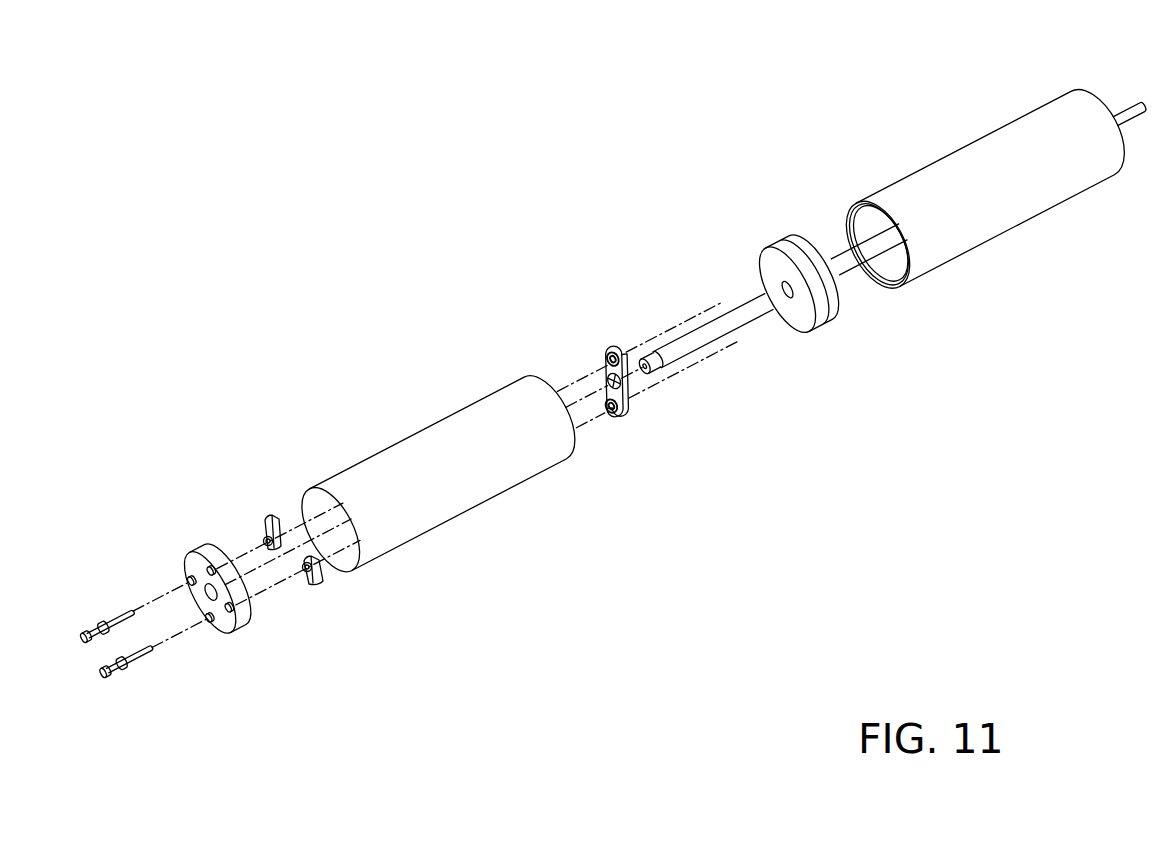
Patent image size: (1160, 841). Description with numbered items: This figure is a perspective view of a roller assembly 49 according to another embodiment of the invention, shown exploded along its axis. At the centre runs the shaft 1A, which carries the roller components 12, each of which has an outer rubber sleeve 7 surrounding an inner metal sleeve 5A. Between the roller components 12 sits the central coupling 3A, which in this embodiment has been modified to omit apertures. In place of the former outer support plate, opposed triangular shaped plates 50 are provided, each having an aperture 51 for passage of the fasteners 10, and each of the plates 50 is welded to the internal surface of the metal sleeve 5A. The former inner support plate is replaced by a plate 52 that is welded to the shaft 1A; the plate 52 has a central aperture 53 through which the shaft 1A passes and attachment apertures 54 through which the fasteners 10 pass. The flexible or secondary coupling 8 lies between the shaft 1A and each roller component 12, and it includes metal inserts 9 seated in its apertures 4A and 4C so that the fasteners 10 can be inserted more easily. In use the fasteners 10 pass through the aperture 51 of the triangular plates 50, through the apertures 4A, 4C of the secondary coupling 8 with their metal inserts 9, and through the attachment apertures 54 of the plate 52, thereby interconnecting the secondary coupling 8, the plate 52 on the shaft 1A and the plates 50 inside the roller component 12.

The roller assembly 49 is at (443, 234).
The roller component 12 is at (721, 301).
The outer rubber sleeve 7 is at (488, 493).
The shaft 1A is at (748, 310).
The central coupling 3A is at (795, 328).
The metal sleeve 5A is at (878, 288).
The plate 52 is at (633, 347).
The central aperture 53 is at (604, 377).
The attachment apertures 54 is at (605, 358).
The triangular shaped plates 50 is at (270, 522).
The aperture 51 is at (263, 534).
The aperture 4A is at (210, 592).
The aperture 4C is at (188, 580).
The secondary coupling 8 is at (245, 613).
The metal inserts 9 is at (211, 550).
The fasteners 10 is at (86, 628).